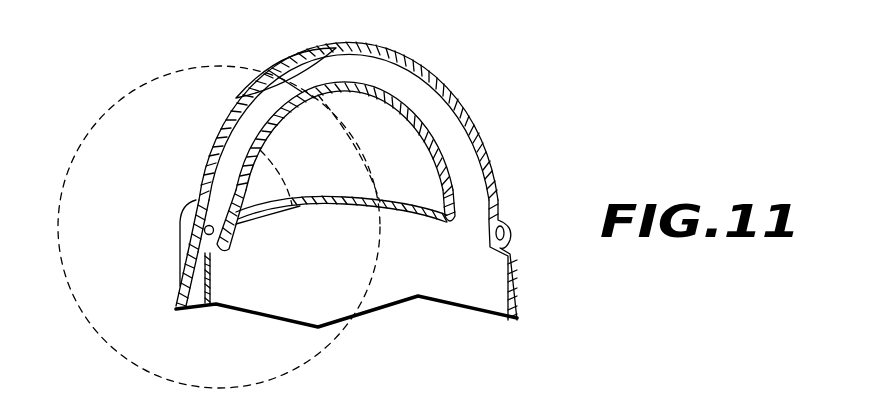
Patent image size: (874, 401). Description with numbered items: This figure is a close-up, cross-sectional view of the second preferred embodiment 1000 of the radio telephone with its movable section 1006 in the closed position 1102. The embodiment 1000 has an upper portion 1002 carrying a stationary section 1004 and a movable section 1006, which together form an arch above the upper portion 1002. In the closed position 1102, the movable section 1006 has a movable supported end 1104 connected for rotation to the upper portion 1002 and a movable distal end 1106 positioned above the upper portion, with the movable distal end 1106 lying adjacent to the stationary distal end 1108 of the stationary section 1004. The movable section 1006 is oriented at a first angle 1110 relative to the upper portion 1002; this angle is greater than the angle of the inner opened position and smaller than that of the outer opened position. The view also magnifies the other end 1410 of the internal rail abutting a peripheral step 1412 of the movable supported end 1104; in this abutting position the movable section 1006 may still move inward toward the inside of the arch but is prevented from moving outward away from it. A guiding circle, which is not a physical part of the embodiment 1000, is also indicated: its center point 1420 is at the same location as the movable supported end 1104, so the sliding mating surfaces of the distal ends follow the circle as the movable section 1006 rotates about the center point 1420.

The second preferred embodiment 1000 is at (143, 46).
The upper portion 1002 is at (350, 256).
The stationary section 1004 is at (455, 76).
The movable section 1006 is at (204, 153).
The closed position 1102 is at (194, 184).
The movable supported end 1104 is at (162, 246).
The movable distal end 1106 is at (240, 97).
The stationary distal end 1108 is at (292, 97).
The first angle 1110 is at (283, 172).
The other end of the internal rail 1410 is at (209, 252).
The peripheral step 1412 is at (181, 256).
The center point 1420 is at (205, 233).